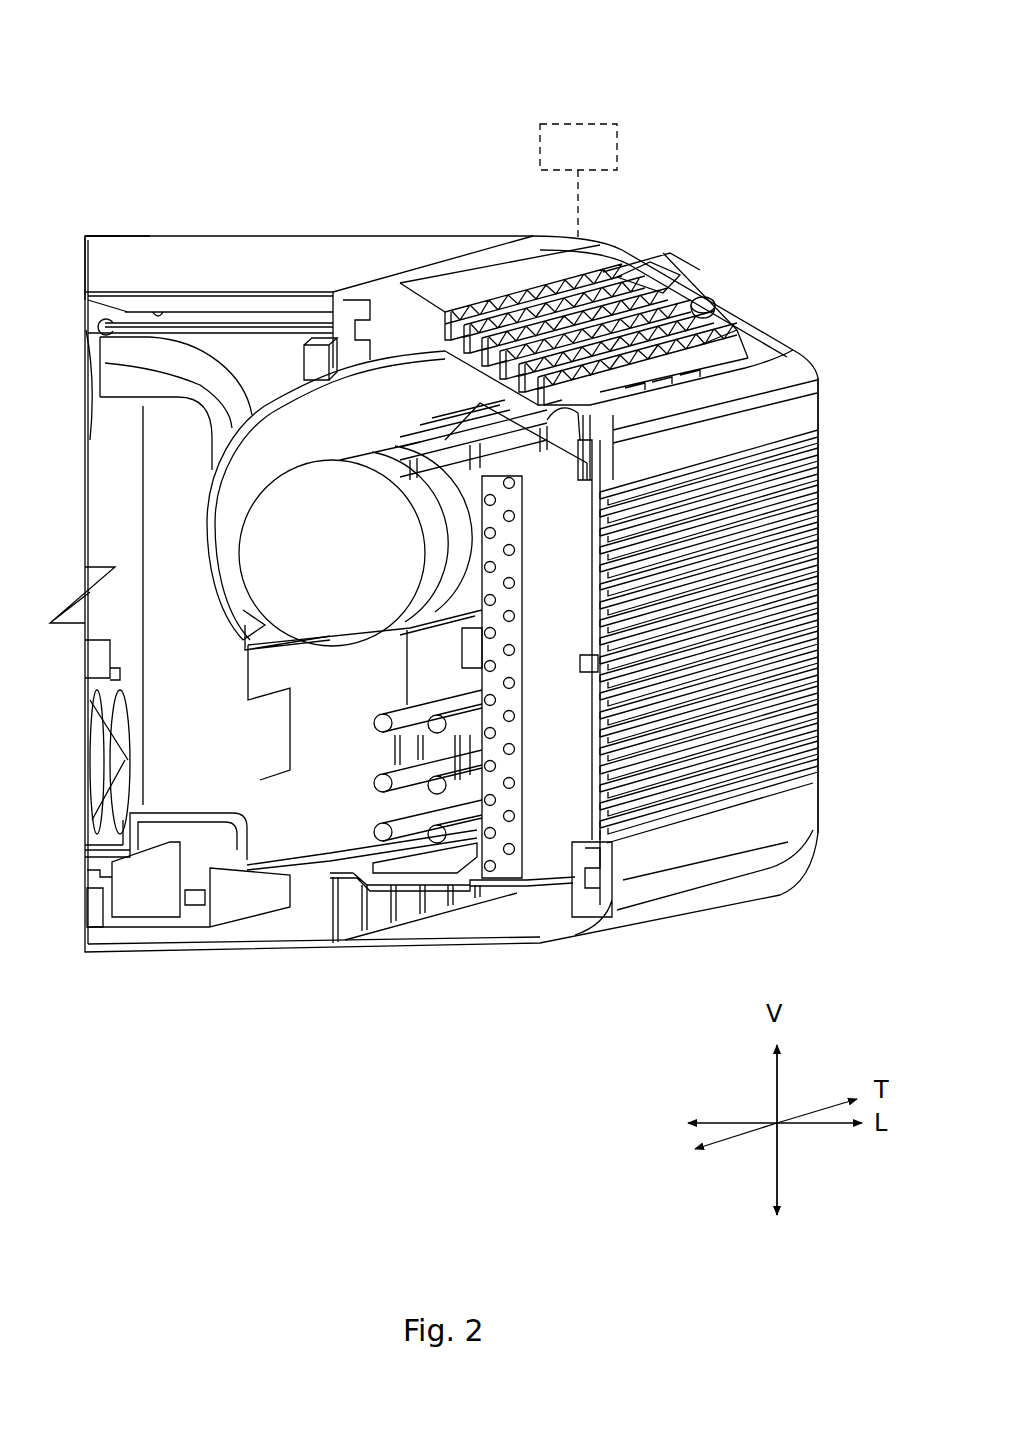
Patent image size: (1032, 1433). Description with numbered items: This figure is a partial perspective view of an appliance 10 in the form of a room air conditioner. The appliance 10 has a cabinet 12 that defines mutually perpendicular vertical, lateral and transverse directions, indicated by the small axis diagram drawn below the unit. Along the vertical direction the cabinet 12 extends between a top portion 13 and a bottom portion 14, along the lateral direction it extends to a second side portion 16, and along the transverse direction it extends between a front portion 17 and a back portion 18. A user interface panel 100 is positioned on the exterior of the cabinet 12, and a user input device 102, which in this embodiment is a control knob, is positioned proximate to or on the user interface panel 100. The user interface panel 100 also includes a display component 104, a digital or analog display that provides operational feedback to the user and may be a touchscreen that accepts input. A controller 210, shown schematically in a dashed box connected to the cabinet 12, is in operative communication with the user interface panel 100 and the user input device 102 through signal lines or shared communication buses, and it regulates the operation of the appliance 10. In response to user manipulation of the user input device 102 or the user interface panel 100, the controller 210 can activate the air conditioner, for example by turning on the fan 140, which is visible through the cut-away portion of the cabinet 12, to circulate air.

The appliance 10 is at (283, 262).
The cabinet 12 is at (213, 235).
The top portion 13 is at (100, 218).
The bottom portion 14 is at (210, 957).
The second side portion 16 is at (842, 604).
The front portion 17 is at (785, 132).
The back portion 18 is at (89, 132).
The user interface panel 100 is at (745, 338).
The user input device 102 is at (712, 300).
The display component 104 is at (668, 273).
The fan 140 is at (353, 528).
The controller 210 is at (578, 181).